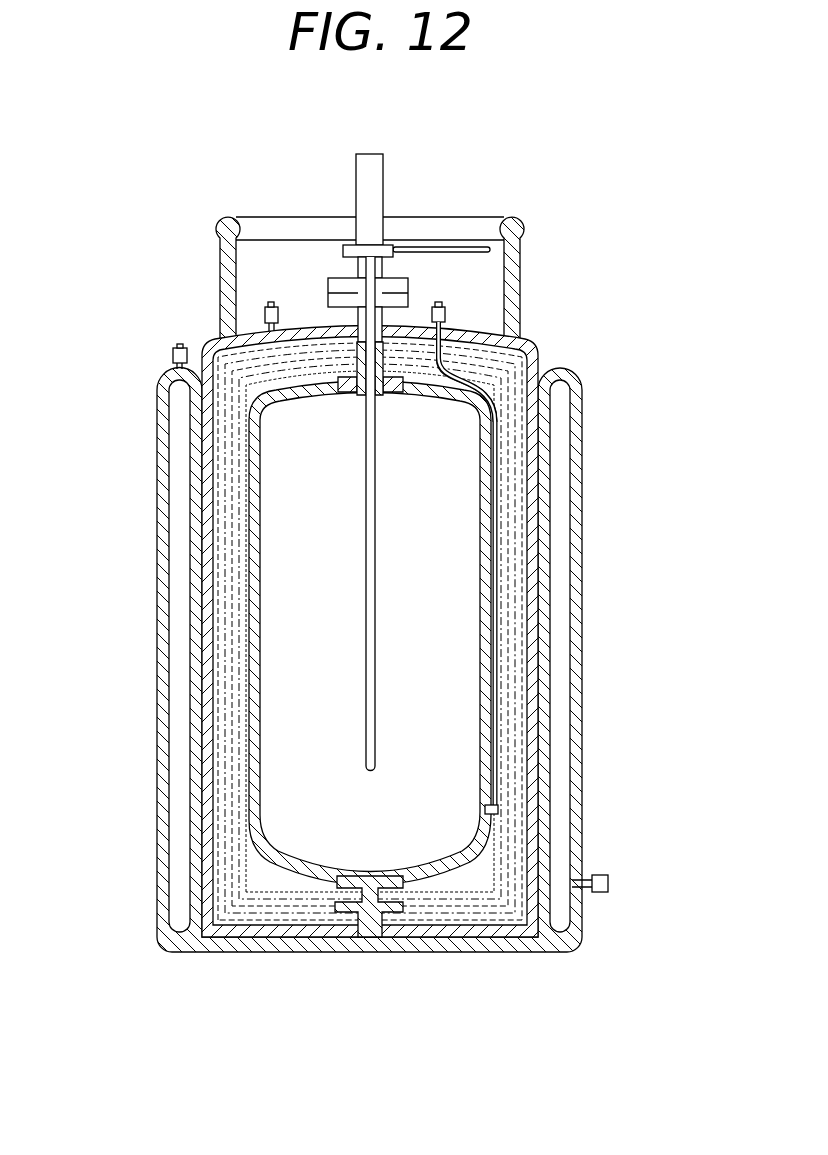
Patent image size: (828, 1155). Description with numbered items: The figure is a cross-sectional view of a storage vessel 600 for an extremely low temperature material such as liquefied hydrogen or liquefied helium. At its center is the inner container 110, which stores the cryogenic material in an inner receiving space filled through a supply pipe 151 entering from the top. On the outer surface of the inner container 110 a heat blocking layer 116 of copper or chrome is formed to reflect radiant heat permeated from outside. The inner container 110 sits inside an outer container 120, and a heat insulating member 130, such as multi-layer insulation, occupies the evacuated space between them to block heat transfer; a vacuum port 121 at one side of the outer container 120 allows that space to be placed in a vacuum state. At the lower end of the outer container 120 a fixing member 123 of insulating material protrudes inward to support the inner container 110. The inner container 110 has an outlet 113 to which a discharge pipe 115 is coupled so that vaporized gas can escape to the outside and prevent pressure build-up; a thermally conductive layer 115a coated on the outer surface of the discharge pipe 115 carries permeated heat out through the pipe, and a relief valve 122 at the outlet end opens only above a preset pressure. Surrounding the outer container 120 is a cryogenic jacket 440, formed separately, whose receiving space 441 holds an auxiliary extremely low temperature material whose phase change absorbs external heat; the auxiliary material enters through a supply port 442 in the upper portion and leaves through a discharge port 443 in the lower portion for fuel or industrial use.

The storage vessel 600 is at (385, 109).
The inner container 110 is at (250, 725).
The outlet 113 is at (492, 816).
The discharge pipe 115 is at (495, 654).
The thermally conductive layer 115a is at (498, 425).
The heat blocking layer 116 is at (247, 637).
The outer container 120 is at (205, 572).
The vacuum port 121 is at (265, 315).
The relief valve 122 is at (445, 316).
The fixing member 123 is at (366, 926).
The heat insulating member 130 is at (228, 546).
The supply pipe 151 is at (365, 188).
The cryogenic jacket 440 is at (165, 500).
The receiving space 441 is at (184, 451).
The supply port 442 is at (173, 356).
The discharge port 443 is at (598, 876).